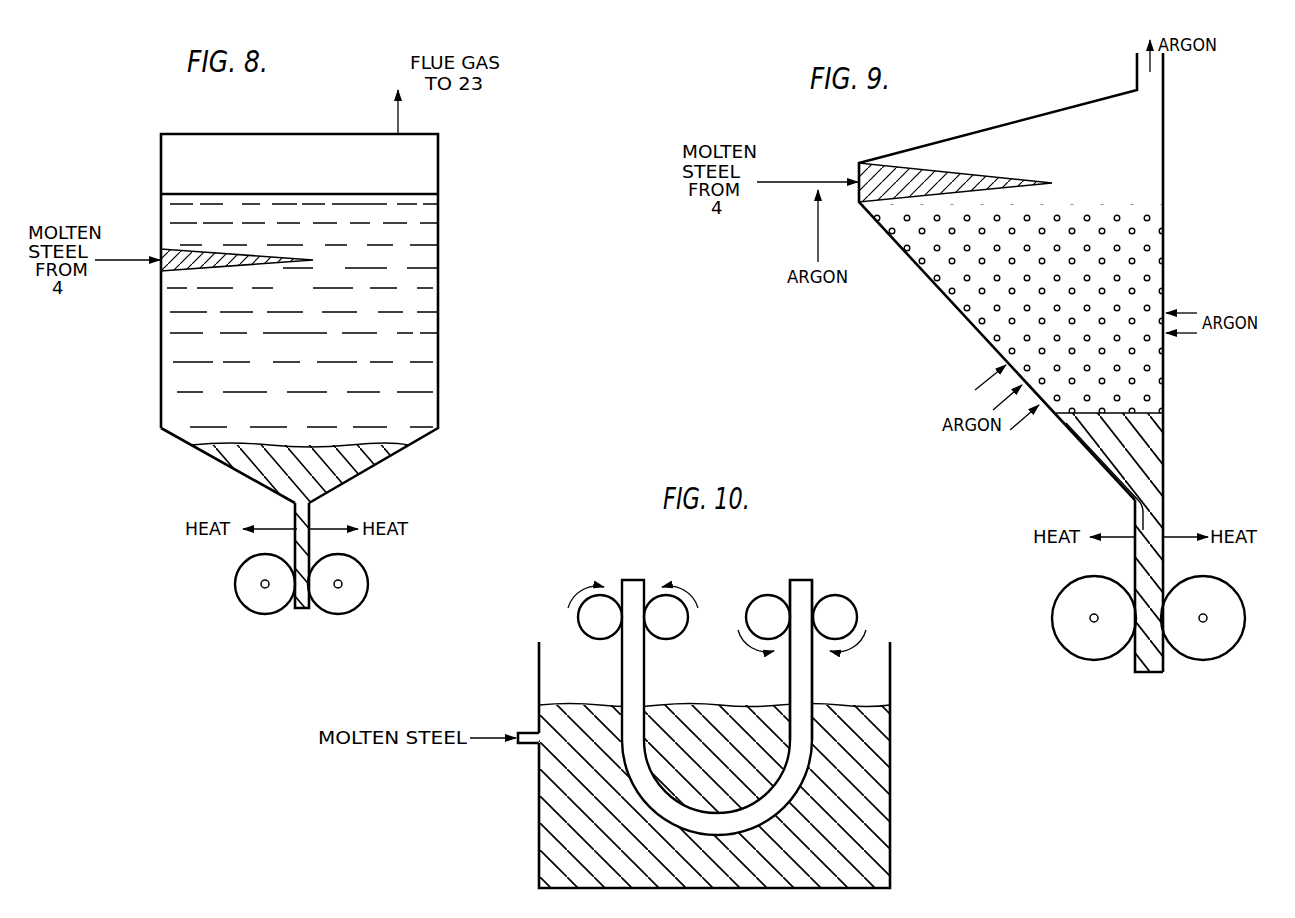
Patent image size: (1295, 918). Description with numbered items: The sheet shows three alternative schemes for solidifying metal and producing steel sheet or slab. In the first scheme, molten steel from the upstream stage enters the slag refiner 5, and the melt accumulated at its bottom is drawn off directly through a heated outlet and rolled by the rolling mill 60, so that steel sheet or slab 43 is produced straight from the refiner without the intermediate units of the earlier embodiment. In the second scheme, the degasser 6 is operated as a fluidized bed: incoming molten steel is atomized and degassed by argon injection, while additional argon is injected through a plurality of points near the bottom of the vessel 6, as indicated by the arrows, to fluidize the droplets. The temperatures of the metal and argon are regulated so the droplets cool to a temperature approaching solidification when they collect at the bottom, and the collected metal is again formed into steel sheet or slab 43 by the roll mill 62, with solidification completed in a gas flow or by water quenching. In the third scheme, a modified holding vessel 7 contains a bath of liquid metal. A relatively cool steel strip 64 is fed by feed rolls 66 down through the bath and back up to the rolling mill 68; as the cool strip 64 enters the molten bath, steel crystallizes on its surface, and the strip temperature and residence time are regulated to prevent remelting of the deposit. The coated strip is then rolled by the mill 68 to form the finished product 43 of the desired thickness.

In FIG. 8, the slag refiner 5 is at (287, 171).
In FIG. 8, the steel sheet or slab 43 is at (300, 610).
In FIG. 9, the steel sheet or slab 43 is at (1136, 664).
In FIG. 10, the steel sheet or slab 43 is at (795, 580).
In FIG. 8, the rolling mill 60 is at (340, 614).
In FIG. 9, the degasser 6 is at (1084, 148).
In FIG. 9, the roll mill 62 is at (1216, 660).
In FIG. 10, the holding vessel 7 is at (706, 871).
In FIG. 10, the steel strip 64 is at (644, 582).
In FIG. 10, the feed rolls 66 is at (578, 614).
In FIG. 10, the rolling mill 68 is at (848, 610).